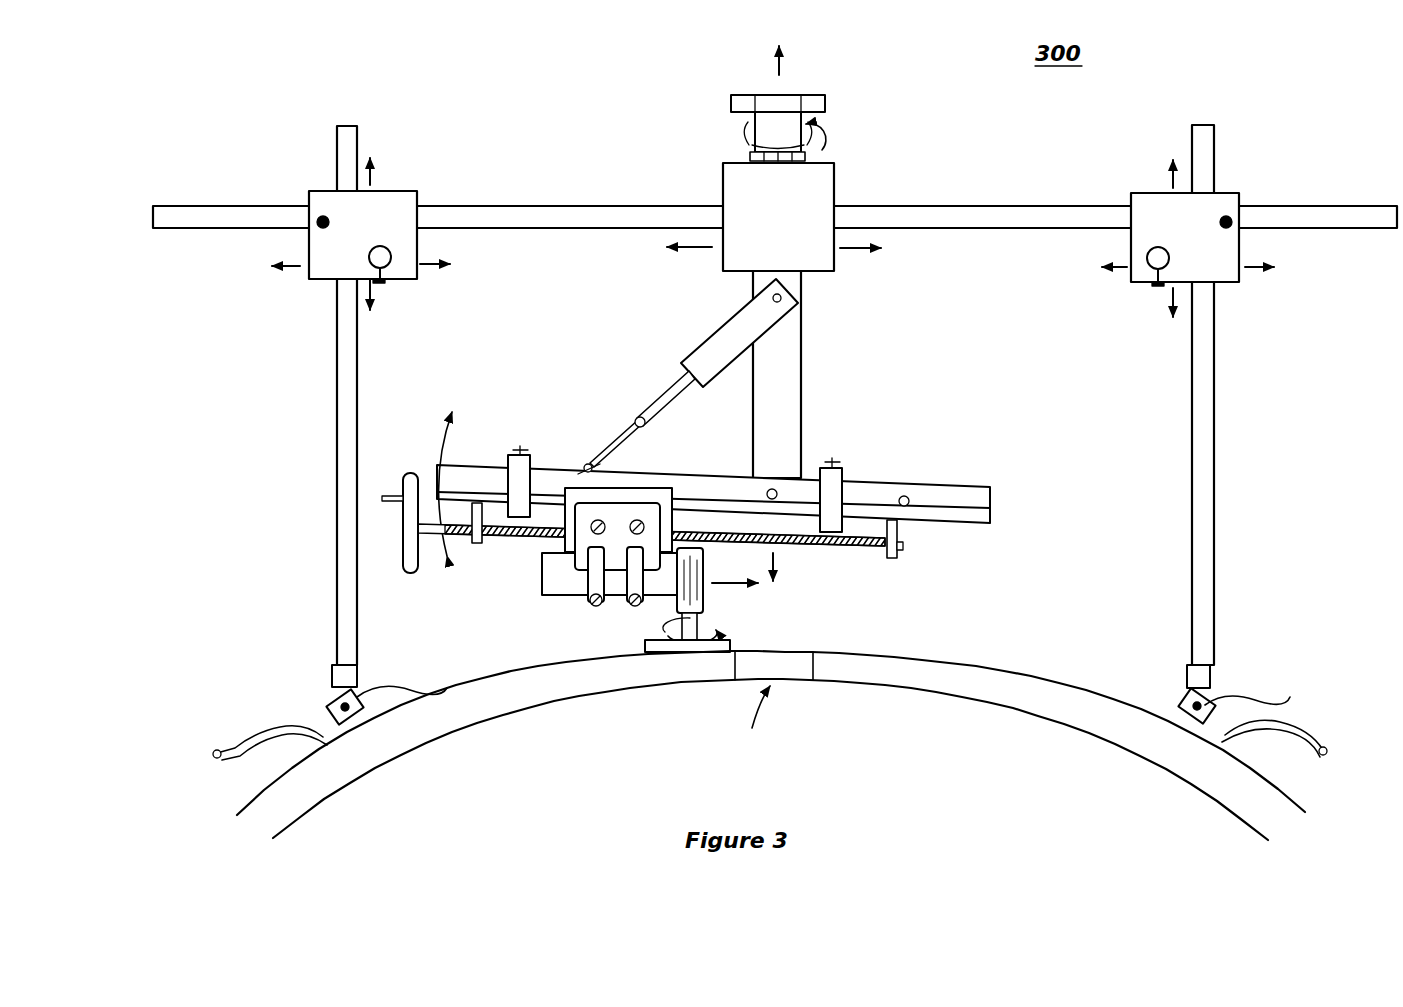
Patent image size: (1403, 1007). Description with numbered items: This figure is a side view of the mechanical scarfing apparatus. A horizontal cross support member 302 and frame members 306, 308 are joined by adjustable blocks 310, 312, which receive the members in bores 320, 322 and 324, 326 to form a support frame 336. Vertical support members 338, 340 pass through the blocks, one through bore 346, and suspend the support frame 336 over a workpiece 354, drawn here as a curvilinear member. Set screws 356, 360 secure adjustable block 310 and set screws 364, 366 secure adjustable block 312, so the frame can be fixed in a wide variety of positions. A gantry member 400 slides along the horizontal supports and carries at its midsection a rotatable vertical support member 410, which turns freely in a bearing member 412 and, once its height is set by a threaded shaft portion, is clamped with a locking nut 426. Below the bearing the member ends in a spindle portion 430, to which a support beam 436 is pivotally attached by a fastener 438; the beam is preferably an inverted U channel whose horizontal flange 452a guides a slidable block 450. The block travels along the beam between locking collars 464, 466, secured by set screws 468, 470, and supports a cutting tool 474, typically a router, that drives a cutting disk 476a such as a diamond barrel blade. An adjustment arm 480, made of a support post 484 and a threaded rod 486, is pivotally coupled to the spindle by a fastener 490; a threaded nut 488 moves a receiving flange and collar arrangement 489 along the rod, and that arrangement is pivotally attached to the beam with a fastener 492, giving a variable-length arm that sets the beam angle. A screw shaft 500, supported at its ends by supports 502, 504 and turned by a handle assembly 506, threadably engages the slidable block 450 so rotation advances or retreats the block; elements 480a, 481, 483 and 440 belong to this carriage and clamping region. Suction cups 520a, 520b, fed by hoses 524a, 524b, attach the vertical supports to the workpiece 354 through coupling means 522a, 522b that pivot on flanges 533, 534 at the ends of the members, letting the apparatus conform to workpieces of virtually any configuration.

The horizontal cross support member 302 is at (1340, 212).
The frame member 306 is at (392, 254).
The frame member 308 is at (1147, 258).
The adjustable block 310 is at (412, 192).
The adjustable block 312 is at (1135, 195).
The bore 320 is at (466, 266).
The bore 322 is at (378, 244).
The bore 324 is at (1093, 250).
The bore 326 is at (1158, 244).
The support frame 336 is at (933, 160).
The vertical support member 338 is at (337, 470).
The vertical support member 340 is at (1214, 490).
The bore 346 is at (274, 242).
The workpiece 354 is at (992, 665).
The set screw 356 is at (323, 220).
The set screw 360 is at (382, 282).
The set screw 364 is at (1229, 225).
The set screw 366 is at (1158, 284).
The gantry member 400 is at (838, 270).
The rotatable vertical support member 410 is at (828, 90).
The bearing member 412 is at (748, 160).
The locking nut 426 is at (812, 150).
The spindle portion 430 is at (774, 404).
The support beam 436 is at (920, 487).
The fastener 438 is at (770, 490).
The beam pivot pin 440 is at (767, 493).
The slidable block 450 is at (652, 490).
The horizontal flange 452a is at (945, 520).
The locking collar 464 is at (510, 462).
The locking collar 466 is at (836, 482).
The set screw 468 is at (520, 450).
The set screw 470 is at (830, 462).
The cutting tool 474 is at (705, 585).
The cutting disk 476a is at (665, 655).
The adjustment arm 480 is at (650, 384).
The carriage base block 480a is at (565, 535).
The carriage post 481 is at (592, 600).
The carriage post 483 is at (632, 600).
The support post 484 is at (762, 318).
The threaded rod 486 is at (590, 465).
The threaded nut 488 is at (607, 455).
The receiving flange and collar arrangement 489 is at (635, 420).
The fastener 490 is at (768, 304).
The fastener 492 is at (908, 508).
The screw shaft 500 is at (800, 545).
The support 502 is at (895, 560).
The support 504 is at (478, 550).
The handle assembly 506 is at (412, 580).
The suction cup 520a is at (318, 730).
The suction cup 520b is at (1162, 700).
The coupling means 522a is at (392, 692).
The coupling means 522b is at (1232, 708).
The hose 524a is at (215, 750).
The hose 524b is at (1326, 760).
The flange 533 is at (352, 660).
The flange 534 is at (1212, 675).